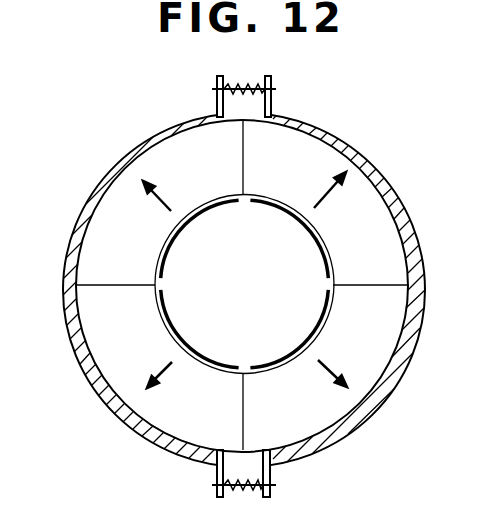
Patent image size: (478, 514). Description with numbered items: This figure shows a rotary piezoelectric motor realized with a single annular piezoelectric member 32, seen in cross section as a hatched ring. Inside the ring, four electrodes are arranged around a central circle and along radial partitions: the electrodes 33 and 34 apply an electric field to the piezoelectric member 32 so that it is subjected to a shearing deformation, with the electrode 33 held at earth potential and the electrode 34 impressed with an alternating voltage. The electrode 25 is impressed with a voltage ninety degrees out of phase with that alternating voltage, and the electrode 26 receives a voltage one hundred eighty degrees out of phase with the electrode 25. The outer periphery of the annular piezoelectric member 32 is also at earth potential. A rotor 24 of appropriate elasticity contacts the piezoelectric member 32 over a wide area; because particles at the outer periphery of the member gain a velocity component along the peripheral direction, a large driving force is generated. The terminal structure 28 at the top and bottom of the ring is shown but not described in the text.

The rotor 24 is at (393, 181).
The annular piezoelectric member 32 is at (329, 160).
The heating element terminal 28 is at (247, 85).
The electrode 34 is at (247, 159).
The electrode 33 is at (112, 285).
The electrode 25 is at (195, 219).
The electrode 26 is at (297, 222).